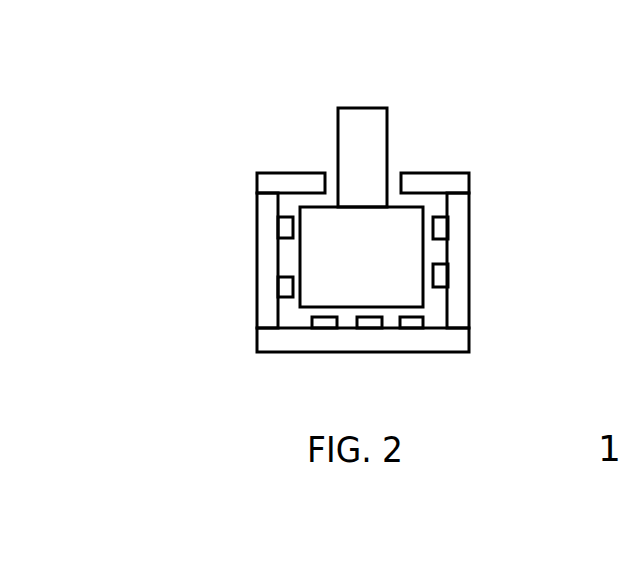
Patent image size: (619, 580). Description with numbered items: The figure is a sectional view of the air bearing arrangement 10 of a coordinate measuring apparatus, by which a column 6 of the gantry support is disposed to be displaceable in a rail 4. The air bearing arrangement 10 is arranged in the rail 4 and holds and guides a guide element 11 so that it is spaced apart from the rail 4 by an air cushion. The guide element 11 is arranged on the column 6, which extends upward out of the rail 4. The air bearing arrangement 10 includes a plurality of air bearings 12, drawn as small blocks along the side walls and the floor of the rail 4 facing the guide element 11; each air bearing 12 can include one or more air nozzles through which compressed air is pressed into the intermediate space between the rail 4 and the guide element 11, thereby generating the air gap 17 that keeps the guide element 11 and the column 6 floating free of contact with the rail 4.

The air bearing arrangement 10 is at (487, 135).
The rail 4 is at (268, 258).
The column 6 is at (360, 140).
The guide element 11 is at (398, 240).
The air bearings 12 is at (410, 322).
The air gap 17 is at (293, 323).